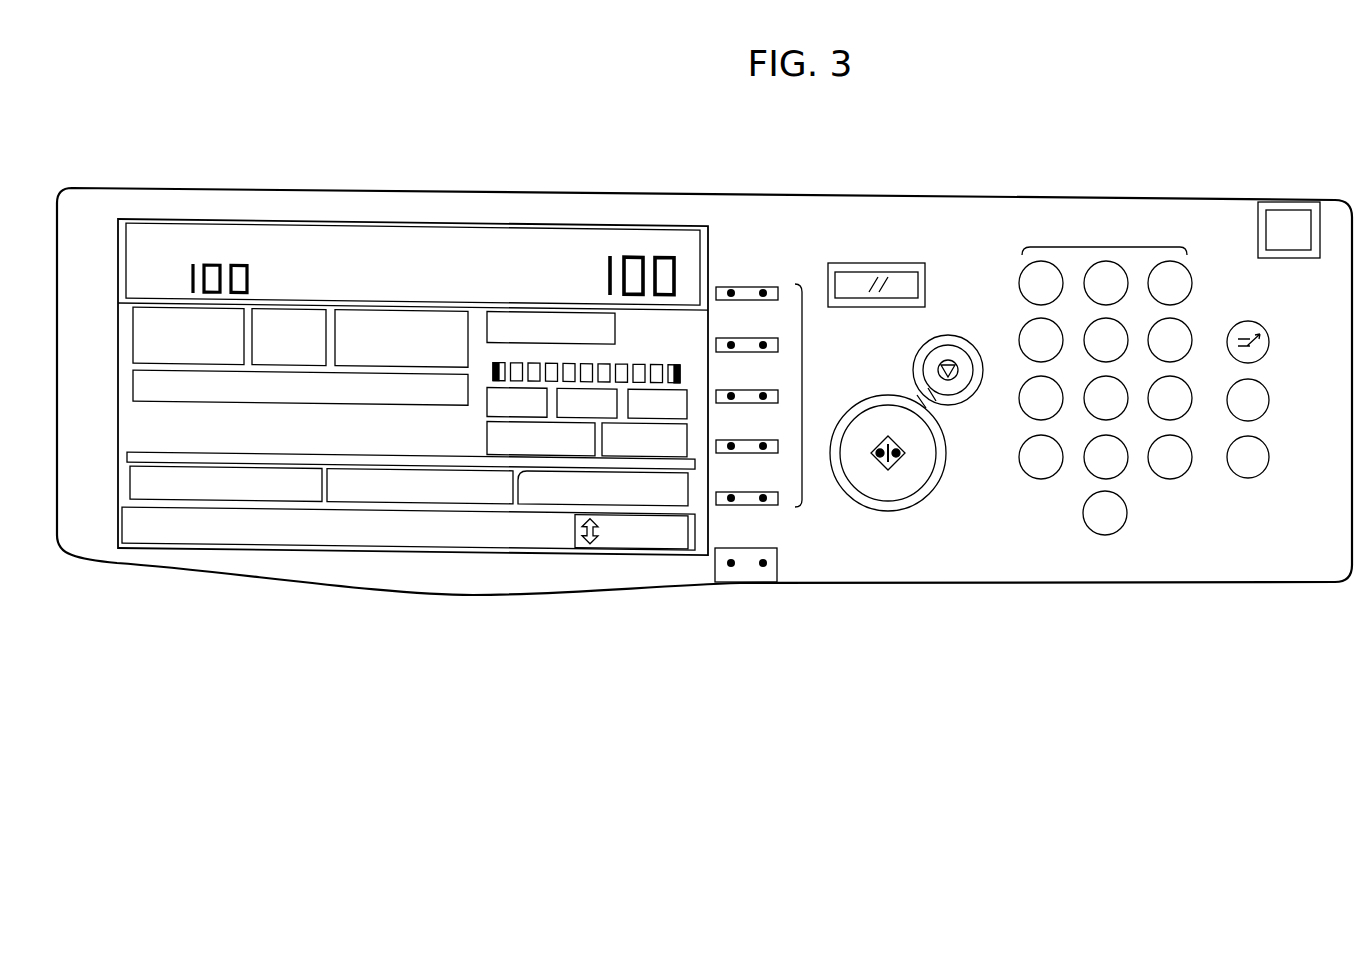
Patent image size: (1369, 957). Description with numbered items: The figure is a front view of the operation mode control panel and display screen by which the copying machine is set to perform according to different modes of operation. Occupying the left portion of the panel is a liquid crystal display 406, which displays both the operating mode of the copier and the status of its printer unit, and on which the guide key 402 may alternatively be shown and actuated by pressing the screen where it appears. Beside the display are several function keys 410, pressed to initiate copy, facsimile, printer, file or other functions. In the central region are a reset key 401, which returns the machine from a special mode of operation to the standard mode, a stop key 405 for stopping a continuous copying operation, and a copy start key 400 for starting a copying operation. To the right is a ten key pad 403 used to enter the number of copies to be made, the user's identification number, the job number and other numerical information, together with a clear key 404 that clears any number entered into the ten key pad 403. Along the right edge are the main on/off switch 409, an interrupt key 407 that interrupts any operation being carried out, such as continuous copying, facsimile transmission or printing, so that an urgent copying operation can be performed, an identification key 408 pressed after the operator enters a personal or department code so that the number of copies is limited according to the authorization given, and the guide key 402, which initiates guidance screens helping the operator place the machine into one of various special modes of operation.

The copy start key 400 is at (888, 512).
The reset key 401 is at (878, 263).
The guide key 402 is at (1270, 458).
The ten key pad 403 is at (1103, 247).
The clear key 404 is at (1127, 514).
The stop key 405 is at (955, 335).
The liquid crystal display 406 is at (518, 222).
The interrupt key 407 is at (1270, 343).
The identification key 408 is at (1270, 401).
The main on/off switch 409 is at (1285, 215).
The function keys 410 is at (802, 393).